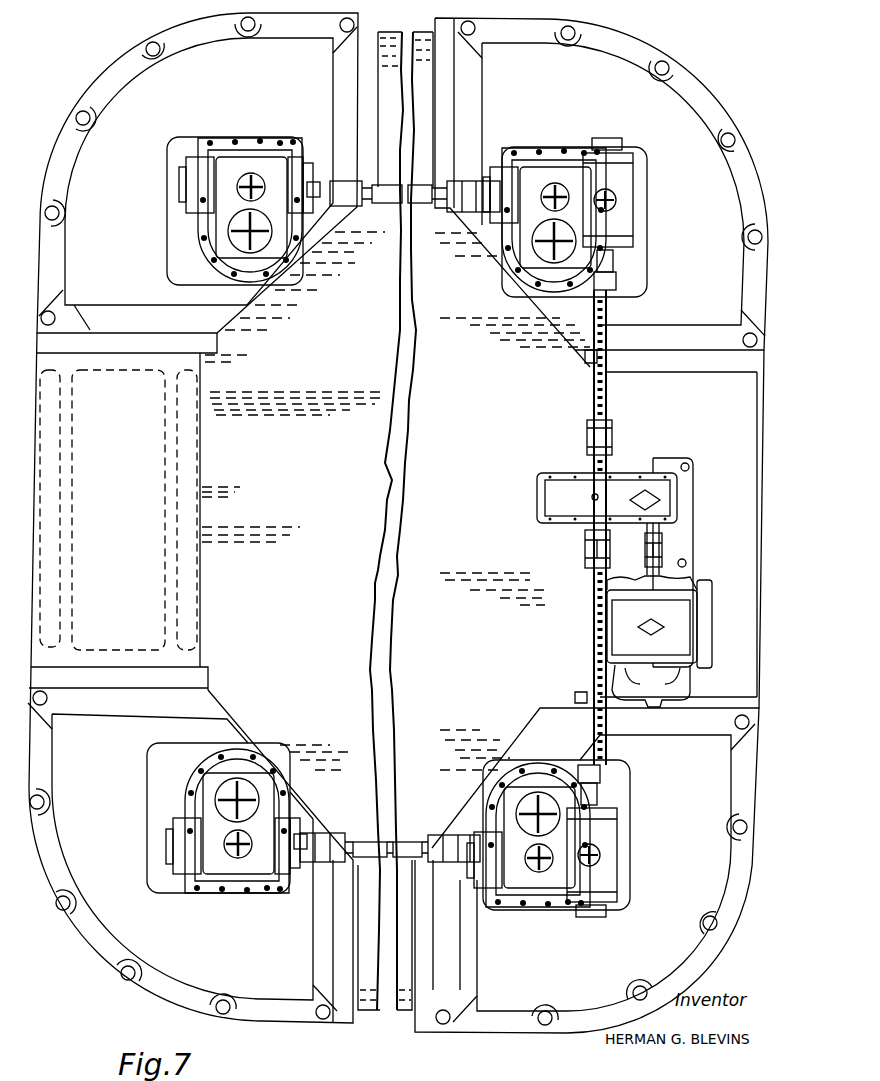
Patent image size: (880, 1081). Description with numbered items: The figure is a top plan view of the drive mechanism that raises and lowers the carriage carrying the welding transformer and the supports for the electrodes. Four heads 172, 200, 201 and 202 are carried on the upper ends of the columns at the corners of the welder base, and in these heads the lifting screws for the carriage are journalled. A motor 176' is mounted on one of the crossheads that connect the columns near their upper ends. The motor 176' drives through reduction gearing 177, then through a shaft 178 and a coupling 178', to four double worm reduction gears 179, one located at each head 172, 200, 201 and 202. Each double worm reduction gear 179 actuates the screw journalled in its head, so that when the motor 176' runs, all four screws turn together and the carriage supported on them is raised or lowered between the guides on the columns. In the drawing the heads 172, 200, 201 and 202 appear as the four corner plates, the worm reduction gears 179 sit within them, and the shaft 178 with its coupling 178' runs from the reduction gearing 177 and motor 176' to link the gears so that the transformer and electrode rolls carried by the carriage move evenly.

The head 172 is at (663, 103).
The head 202 is at (147, 88).
The head 201 is at (117, 927).
The head 200 is at (653, 958).
The double worm reduction gear 179 is at (226, 148).
The shaft 178 is at (453, 521).
The coupling 178' is at (532, 619).
The reduction gearing 177 is at (577, 487).
The motor 176' is at (677, 615).